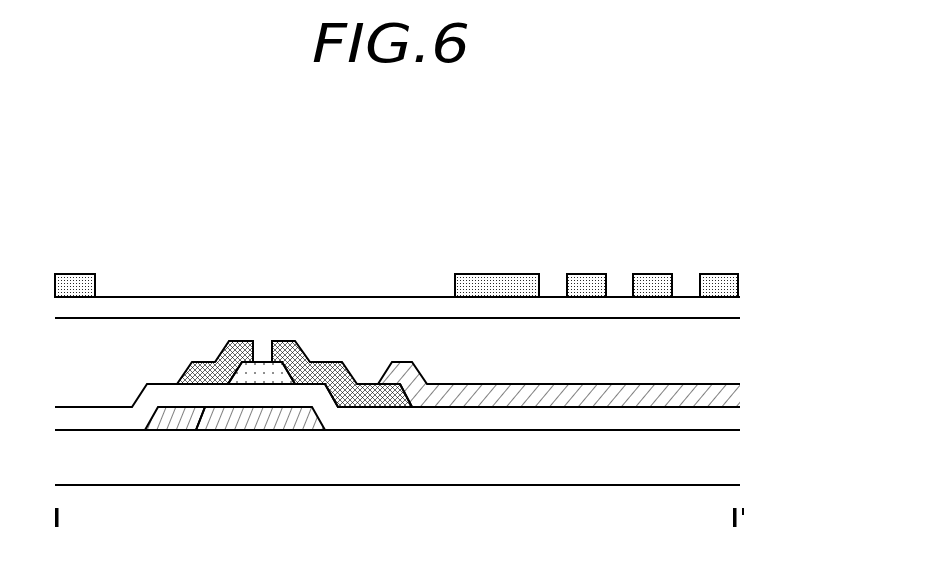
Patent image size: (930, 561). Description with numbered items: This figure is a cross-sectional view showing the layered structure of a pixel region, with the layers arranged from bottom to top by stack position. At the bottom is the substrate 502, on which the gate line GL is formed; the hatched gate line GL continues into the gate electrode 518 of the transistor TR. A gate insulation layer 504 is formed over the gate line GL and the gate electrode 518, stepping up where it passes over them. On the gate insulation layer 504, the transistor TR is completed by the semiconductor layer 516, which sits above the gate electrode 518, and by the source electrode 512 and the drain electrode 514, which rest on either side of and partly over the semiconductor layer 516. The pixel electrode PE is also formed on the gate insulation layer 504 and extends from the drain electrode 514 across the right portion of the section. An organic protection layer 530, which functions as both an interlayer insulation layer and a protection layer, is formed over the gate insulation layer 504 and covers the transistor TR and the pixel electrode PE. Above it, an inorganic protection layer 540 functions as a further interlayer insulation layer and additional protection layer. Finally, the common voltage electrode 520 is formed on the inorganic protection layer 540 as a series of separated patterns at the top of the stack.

The substrate 502 is at (737, 452).
The gate line GL is at (168, 423).
The gate electrode 518 is at (303, 415).
The gate insulation layer 504 is at (737, 417).
The source electrode 512 is at (226, 345).
The semiconductor layer 516 is at (260, 364).
The drain electrode 514 is at (290, 350).
The transistor TR is at (426, 309).
The pixel electrode PE is at (737, 390).
The organic protection layer 530 is at (737, 333).
The inorganic protection layer 540 is at (737, 307).
The common voltage electrode 520 is at (738, 279).